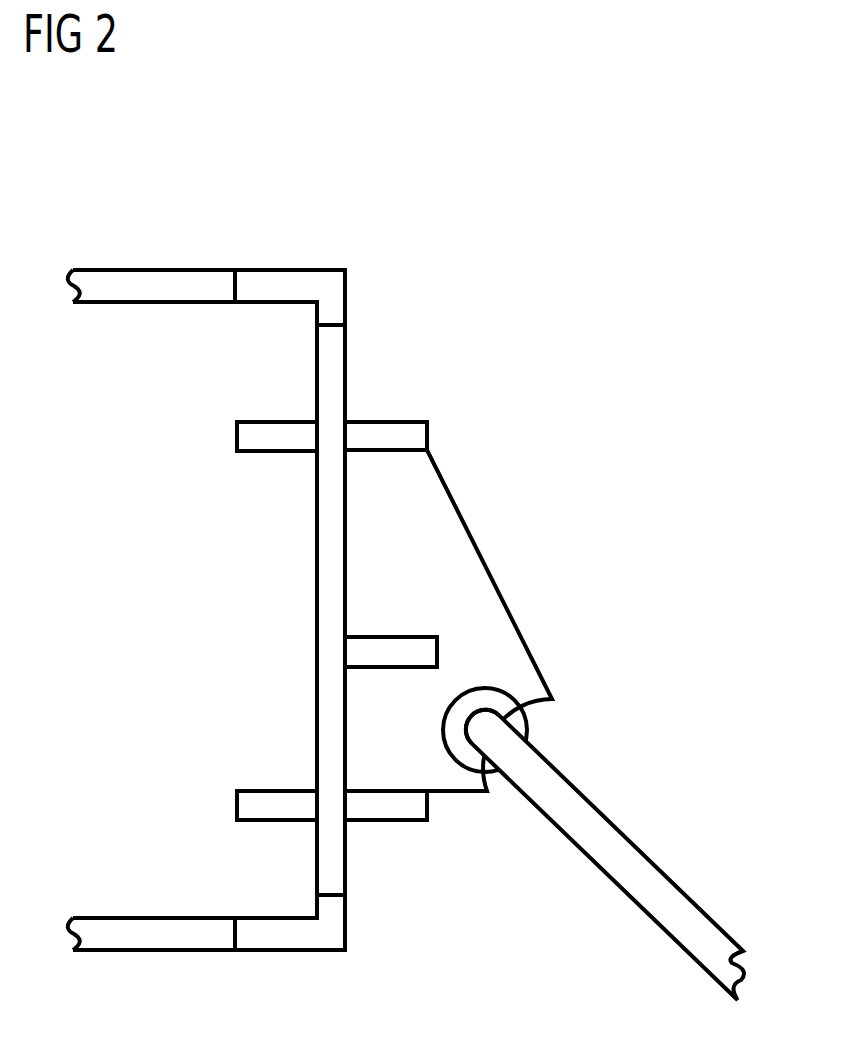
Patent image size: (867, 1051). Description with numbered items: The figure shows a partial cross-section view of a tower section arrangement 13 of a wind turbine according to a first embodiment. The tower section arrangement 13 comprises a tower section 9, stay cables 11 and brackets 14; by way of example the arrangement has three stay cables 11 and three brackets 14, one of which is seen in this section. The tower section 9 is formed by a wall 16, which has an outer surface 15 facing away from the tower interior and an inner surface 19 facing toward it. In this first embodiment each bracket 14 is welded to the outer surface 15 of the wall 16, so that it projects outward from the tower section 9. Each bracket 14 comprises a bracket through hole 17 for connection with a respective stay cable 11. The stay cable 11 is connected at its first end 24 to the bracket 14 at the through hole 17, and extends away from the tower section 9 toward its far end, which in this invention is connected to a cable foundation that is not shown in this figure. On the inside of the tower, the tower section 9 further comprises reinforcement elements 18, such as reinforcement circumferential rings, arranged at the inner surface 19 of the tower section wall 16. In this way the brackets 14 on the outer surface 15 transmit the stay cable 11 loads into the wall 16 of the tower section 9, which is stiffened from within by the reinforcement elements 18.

The tower section 9 is at (347, 308).
The stay cable 11 is at (655, 865).
The tower section arrangement 13 is at (635, 200).
The bracket 14 is at (455, 577).
The outer surface 15 is at (346, 383).
The wall 16 is at (347, 362).
The bracket through hole 17 is at (495, 710).
The reinforcement elements 18 is at (237, 434).
The inner surface 19 is at (317, 372).
The first end 24 is at (533, 742).